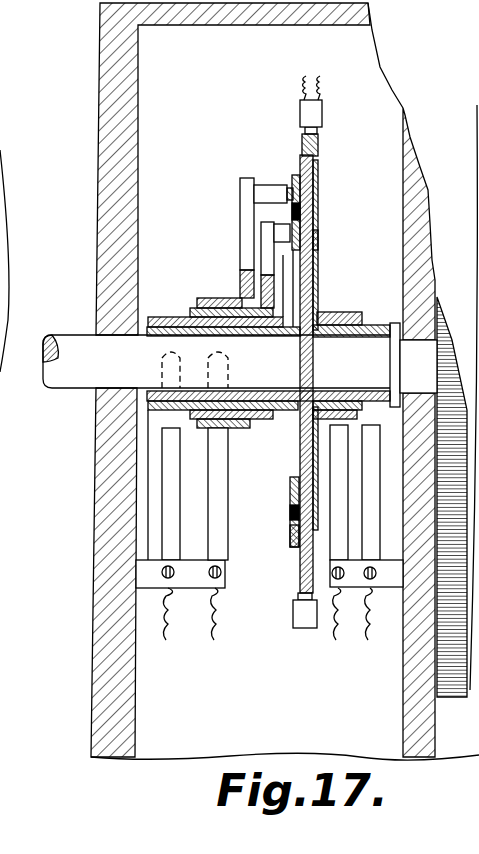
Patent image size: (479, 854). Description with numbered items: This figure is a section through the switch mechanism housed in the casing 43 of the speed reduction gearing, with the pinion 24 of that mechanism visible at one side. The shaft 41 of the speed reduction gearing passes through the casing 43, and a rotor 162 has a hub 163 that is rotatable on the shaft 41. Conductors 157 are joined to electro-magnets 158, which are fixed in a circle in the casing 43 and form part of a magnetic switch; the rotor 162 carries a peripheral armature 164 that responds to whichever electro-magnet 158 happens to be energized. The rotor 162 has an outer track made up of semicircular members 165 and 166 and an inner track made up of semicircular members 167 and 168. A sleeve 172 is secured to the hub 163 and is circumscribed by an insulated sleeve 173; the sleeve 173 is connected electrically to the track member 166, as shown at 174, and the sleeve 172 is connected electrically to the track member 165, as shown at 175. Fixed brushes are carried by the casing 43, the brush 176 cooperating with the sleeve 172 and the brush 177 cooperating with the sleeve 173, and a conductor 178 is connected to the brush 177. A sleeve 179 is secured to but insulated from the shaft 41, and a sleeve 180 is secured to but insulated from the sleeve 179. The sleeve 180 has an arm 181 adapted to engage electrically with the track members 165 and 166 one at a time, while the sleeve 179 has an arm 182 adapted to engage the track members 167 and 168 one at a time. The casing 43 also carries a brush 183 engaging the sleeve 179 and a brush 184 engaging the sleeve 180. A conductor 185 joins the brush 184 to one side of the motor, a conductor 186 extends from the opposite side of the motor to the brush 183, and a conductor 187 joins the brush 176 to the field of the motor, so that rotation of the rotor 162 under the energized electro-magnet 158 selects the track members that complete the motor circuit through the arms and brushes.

The casing of the speed reduction mechanism 43 is at (98, 44).
The pinion 24 is at (446, 698).
The shaft 41 is at (84, 374).
The conductors 157 is at (300, 82).
The electro-magnets 158 is at (298, 118).
The rotor 162 is at (321, 172).
The hub 163 is at (330, 339).
The peripheral armature 164 is at (321, 145).
The semicircular track member 165 is at (287, 534).
The semicircular track member 166 is at (294, 178).
The semicircular track member 167 is at (290, 484).
The semicircular track member 168 is at (321, 240).
The sleeve 172 is at (383, 323).
The insulated sleeve 173 is at (338, 311).
The electrical connection 174 is at (321, 214).
The electrical connection 175 is at (300, 450).
The brush 176 is at (414, 365).
The brush 177 is at (338, 526).
The conductor 178 is at (340, 646).
The sleeve 179 is at (172, 315).
The sleeve 180 is at (218, 297).
The arm 181 is at (240, 208).
The arm 182 is at (261, 246).
The brush 183 is at (165, 484).
The brush 184 is at (222, 492).
The conductor 185 is at (231, 631).
The conductor 186 is at (163, 631).
The conductor 187 is at (373, 635).